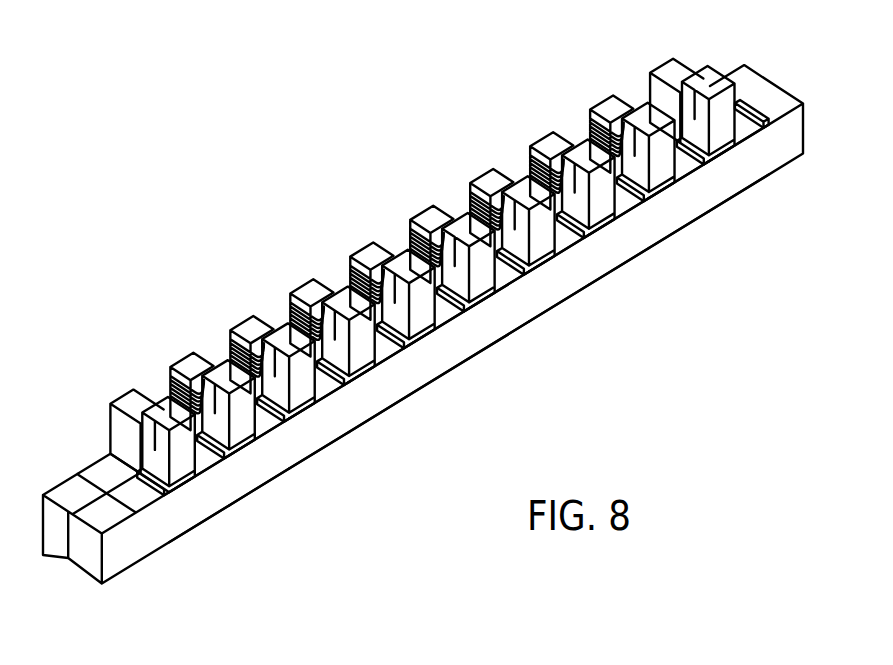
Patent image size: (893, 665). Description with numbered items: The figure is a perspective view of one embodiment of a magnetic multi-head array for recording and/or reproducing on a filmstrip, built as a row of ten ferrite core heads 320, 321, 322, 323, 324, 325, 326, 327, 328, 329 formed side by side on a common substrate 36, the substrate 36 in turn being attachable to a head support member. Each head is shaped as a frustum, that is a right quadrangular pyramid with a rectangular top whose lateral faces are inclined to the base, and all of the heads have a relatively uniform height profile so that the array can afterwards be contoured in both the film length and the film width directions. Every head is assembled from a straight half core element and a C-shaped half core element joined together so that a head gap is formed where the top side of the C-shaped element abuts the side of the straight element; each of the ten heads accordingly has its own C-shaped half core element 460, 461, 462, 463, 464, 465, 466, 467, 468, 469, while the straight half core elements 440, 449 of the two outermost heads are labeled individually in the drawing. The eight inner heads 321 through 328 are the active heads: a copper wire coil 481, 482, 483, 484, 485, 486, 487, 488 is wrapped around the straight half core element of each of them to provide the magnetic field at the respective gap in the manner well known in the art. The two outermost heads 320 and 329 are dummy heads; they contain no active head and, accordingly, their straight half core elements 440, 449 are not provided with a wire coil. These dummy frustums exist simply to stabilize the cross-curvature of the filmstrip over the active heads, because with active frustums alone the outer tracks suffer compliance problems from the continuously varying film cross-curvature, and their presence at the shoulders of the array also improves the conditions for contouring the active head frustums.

The substrate 36 is at (80, 557).
The straight half core element 440 is at (120, 433).
The straight half core element 449 is at (648, 88).
The ferrite core head 320 is at (188, 482).
The ferrite core head 321 is at (253, 410).
The ferrite core head 322 is at (313, 373).
The ferrite core head 323 is at (373, 336).
The ferrite core head 324 is at (433, 300).
The ferrite core head 325 is at (493, 263).
The ferrite core head 326 is at (553, 226).
The ferrite core head 327 is at (613, 189).
The ferrite core head 328 is at (673, 152).
The ferrite core head 329 is at (730, 145).
The C-shaped half core element 460 is at (188, 450).
The C-shaped half core element 461 is at (248, 413).
The C-shaped half core element 462 is at (308, 376).
The C-shaped half core element 463 is at (368, 340).
The C-shaped half core element 464 is at (428, 303).
The C-shaped half core element 465 is at (488, 266).
The C-shaped half core element 466 is at (548, 229).
The C-shaped half core element 467 is at (608, 192).
The C-shaped half core element 468 is at (668, 156).
The C-shaped half core element 469 is at (742, 106).
The copper wire coil 481 is at (166, 385).
The copper wire coil 482 is at (226, 348).
The copper wire coil 483 is at (286, 311).
The copper wire coil 484 is at (346, 274).
The copper wire coil 485 is at (406, 238).
The copper wire coil 486 is at (466, 201).
The copper wire coil 487 is at (526, 164).
The copper wire coil 488 is at (586, 127).